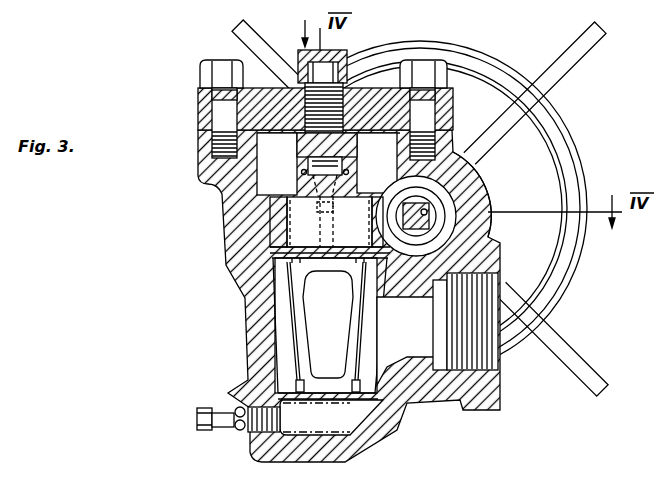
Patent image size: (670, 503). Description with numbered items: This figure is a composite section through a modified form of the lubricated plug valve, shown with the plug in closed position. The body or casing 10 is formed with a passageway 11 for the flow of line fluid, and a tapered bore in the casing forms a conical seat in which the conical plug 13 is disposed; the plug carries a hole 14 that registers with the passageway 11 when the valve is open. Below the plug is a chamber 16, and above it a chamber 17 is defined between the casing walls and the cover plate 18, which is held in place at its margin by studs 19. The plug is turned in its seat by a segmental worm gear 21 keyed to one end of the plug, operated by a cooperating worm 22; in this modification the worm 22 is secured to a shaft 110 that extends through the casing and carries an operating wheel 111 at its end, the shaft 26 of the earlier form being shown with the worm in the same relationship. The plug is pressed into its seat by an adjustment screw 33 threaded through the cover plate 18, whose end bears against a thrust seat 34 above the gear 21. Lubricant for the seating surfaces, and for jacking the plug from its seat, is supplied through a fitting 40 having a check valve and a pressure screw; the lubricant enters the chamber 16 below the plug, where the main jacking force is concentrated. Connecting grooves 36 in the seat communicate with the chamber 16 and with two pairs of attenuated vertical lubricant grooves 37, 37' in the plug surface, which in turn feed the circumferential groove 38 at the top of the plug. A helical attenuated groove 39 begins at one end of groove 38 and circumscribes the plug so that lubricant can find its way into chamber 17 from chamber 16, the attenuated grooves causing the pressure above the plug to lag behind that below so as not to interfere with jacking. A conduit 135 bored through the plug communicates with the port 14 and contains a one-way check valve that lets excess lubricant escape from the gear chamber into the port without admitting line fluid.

The body or casing 10 is at (262, 338).
The passageway 11 is at (423, 343).
The conical plug 13 is at (373, 352).
The hole 14 is at (335, 363).
The chamber 16 is at (327, 433).
The chamber 17 is at (285, 179).
The cover plate 18 is at (275, 103).
The studs 19 is at (207, 78).
The segmental worm gear 21 is at (283, 215).
The worm 22 is at (443, 208).
The shaft 26 is at (466, 183).
The adjustment screw 33 is at (372, 83).
The thrust seat 34 is at (344, 50).
The connecting grooves 36 is at (360, 403).
The vertical lubricant grooves 37 is at (383, 327).
The vertical lubricant grooves 37' is at (237, 327).
The circumferential groove 38 is at (314, 280).
The helical attenuated groove 39 is at (350, 267).
The fitting 40 is at (248, 430).
The shaft 110 is at (444, 236).
The operating wheel 111 is at (572, 260).
The conduit 135 is at (330, 225).